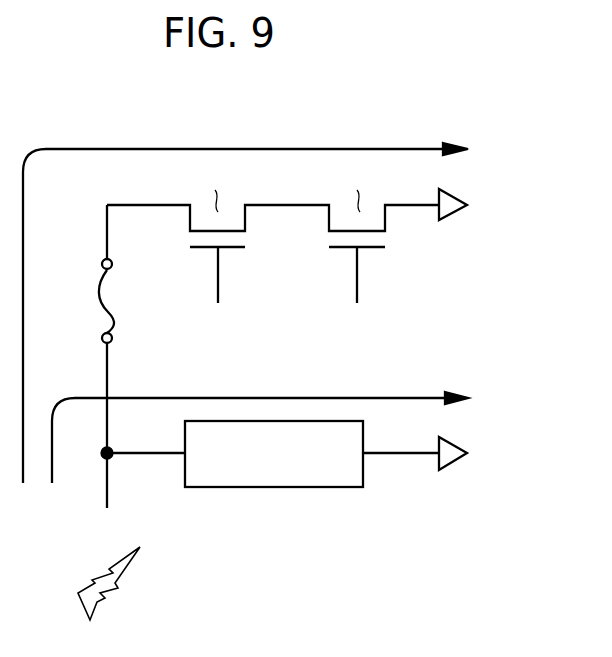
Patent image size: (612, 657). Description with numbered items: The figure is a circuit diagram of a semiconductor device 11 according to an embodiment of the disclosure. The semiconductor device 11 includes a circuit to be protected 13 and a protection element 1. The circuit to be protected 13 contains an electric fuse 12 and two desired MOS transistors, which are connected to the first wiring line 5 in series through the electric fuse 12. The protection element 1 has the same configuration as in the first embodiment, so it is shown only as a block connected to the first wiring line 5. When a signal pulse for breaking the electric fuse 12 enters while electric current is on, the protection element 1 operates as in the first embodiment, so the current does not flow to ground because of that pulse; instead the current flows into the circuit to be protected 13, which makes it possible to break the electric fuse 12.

The protection element 1 is at (263, 489).
The first wiring line 5 is at (154, 478).
The semiconductor device 11 is at (277, 98).
The electric fuse 12 is at (114, 317).
The circuit to be protected 13 is at (283, 306).